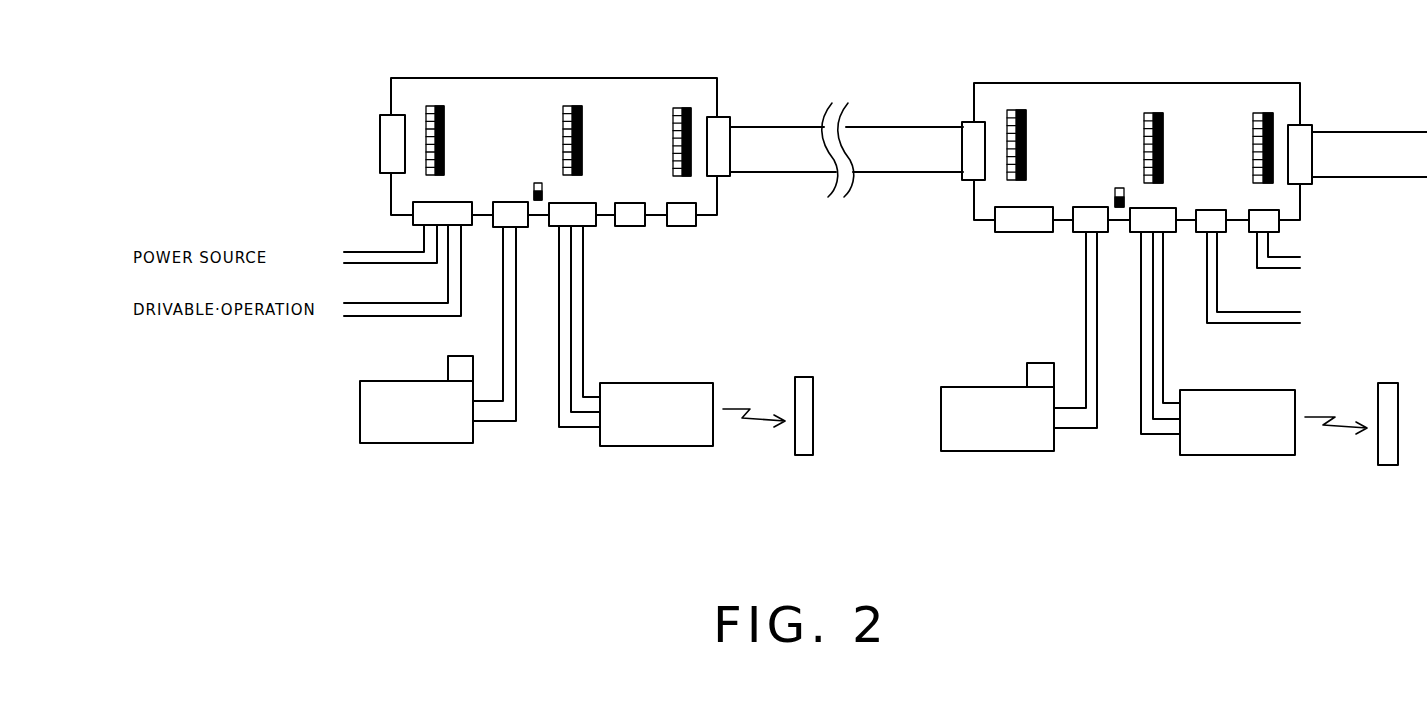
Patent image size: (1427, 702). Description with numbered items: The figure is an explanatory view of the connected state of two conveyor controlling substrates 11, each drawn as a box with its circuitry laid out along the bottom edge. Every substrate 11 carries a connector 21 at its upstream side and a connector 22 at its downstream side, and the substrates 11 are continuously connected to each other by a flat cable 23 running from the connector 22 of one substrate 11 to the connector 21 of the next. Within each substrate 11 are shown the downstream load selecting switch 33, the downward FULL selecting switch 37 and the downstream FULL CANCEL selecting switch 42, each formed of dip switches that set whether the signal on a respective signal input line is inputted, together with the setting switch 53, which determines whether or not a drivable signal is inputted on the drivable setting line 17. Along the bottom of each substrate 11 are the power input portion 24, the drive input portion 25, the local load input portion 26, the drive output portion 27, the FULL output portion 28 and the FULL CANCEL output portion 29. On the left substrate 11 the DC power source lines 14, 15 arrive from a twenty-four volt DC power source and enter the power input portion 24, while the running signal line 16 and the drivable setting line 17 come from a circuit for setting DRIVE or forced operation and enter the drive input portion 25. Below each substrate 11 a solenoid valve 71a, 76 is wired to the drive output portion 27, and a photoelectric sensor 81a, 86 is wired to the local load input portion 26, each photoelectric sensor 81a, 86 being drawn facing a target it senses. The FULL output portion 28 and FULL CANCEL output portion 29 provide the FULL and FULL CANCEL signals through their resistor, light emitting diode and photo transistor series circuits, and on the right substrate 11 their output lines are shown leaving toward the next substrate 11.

The substrate 11 is at (617, 88).
The connector 21 is at (380, 133).
The connector 22 is at (722, 120).
The flat cable 23 is at (790, 127).
The downstream load selecting switch 33 is at (445, 130).
The downward FULL selecting switch 37 is at (583, 134).
The downstream FULL CANCEL selecting switch 42 is at (673, 128).
The setting switch 53 is at (543, 190).
The DC power source line 14 is at (355, 250).
The DC power source line 15 is at (368, 265).
The running signal line 16 is at (430, 302).
The drivable setting line 17 is at (415, 318).
The power input portion 24 is at (418, 222).
The drive input portion 25 is at (465, 228).
The local load input portion 26 is at (590, 228).
The drive output portion 27 is at (520, 228).
The FULL output portion 28 is at (633, 228).
The FULL CANCEL output portion 29 is at (680, 228).
The solenoid valve 71a is at (422, 443).
The solenoid valve 76 is at (1003, 451).
The photoelectric sensor 81a is at (670, 446).
The photoelectric sensor 86 is at (1250, 455).